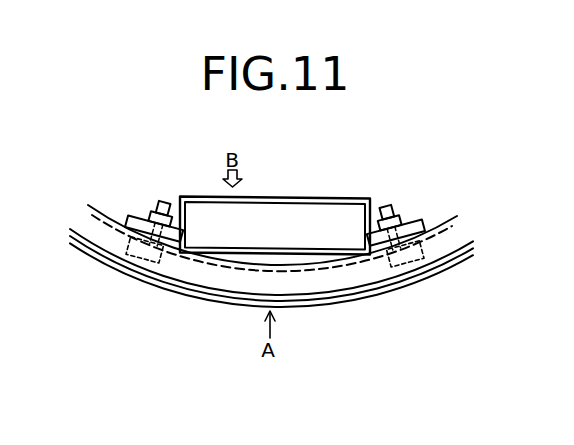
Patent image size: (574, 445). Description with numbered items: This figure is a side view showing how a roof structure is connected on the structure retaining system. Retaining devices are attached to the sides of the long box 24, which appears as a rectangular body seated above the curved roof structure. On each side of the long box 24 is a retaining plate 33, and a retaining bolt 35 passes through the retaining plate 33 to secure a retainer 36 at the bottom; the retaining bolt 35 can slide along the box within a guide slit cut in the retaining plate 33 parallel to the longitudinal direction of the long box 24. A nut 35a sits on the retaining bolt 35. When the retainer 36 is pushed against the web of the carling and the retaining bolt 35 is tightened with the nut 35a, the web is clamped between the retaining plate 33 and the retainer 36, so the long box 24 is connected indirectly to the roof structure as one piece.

The long box 24 is at (289, 197).
The retaining plate 33 is at (131, 216).
The retaining bolt 35 is at (170, 201).
The nut 35a is at (153, 210).
The retainer 36 is at (140, 268).